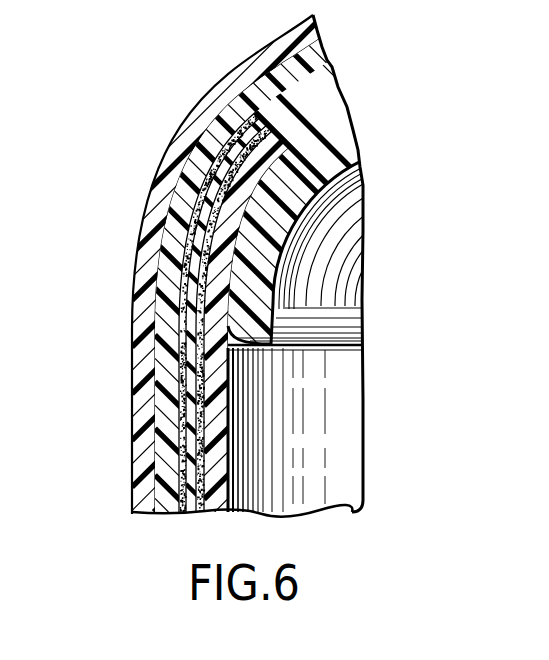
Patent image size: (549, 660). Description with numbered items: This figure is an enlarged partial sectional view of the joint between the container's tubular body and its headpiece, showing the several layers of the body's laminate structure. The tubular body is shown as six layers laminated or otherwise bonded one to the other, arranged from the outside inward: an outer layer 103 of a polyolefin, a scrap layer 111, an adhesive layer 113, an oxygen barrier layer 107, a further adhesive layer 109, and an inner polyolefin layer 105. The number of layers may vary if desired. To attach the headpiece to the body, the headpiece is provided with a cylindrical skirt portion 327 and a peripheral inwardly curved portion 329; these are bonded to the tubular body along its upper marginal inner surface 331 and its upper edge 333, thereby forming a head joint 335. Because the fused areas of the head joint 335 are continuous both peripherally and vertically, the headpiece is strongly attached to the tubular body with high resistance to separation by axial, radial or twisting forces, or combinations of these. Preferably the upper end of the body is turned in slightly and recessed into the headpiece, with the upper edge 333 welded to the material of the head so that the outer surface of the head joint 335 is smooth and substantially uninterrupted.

The outer layer 103 is at (140, 317).
The scrap layer 111 is at (165, 262).
The adhesive layer 113 is at (200, 205).
The oxygen barrier layer 107 is at (217, 181).
The adhesive layer 109 is at (240, 163).
The inner polyolefin layer 105 is at (218, 494).
The upper edge 333 is at (252, 100).
The peripheral inwardly curved portion 329 is at (312, 193).
The head joint 335 is at (285, 222).
The cylindrical skirt portion 327 is at (260, 295).
The upper marginal inner surface 331 is at (305, 346).